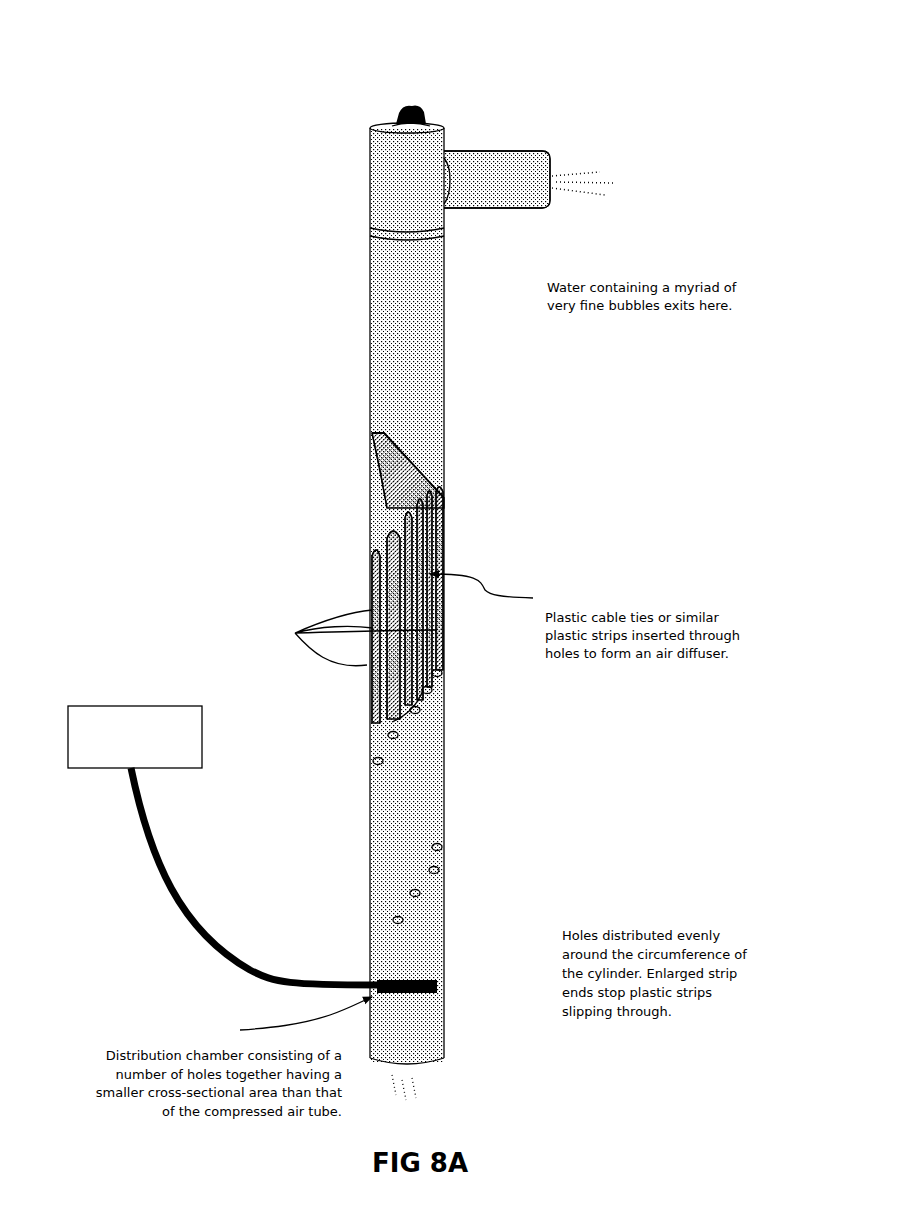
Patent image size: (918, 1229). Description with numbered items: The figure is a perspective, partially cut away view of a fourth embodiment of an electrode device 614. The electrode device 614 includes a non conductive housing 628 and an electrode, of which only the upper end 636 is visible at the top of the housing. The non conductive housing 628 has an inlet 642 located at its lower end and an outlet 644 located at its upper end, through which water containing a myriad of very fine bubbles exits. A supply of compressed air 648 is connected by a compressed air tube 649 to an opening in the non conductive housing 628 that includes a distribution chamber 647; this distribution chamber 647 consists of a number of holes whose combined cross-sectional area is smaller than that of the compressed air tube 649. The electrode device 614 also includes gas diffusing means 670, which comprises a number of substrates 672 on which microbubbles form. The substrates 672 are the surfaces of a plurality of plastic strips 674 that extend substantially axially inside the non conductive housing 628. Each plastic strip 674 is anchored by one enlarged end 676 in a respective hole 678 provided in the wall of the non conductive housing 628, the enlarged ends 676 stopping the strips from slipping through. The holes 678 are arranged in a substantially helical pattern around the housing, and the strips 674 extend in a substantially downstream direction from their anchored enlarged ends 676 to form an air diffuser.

The electrode device 614 is at (599, 110).
The non conductive housing 628 is at (364, 333).
The upper end of electrode 636 is at (409, 101).
The inlet 642 is at (432, 1068).
The outlet 644 is at (550, 194).
The distribution chamber 647 is at (440, 989).
The supply of compressed air 648 is at (110, 772).
The compressed air tube 649 is at (156, 872).
The gas diffusing means 670 is at (466, 742).
The substrates 672 is at (388, 514).
The plastic strips 674 is at (343, 638).
The enlarged end 676 is at (384, 761).
The holes 678 is at (440, 745).